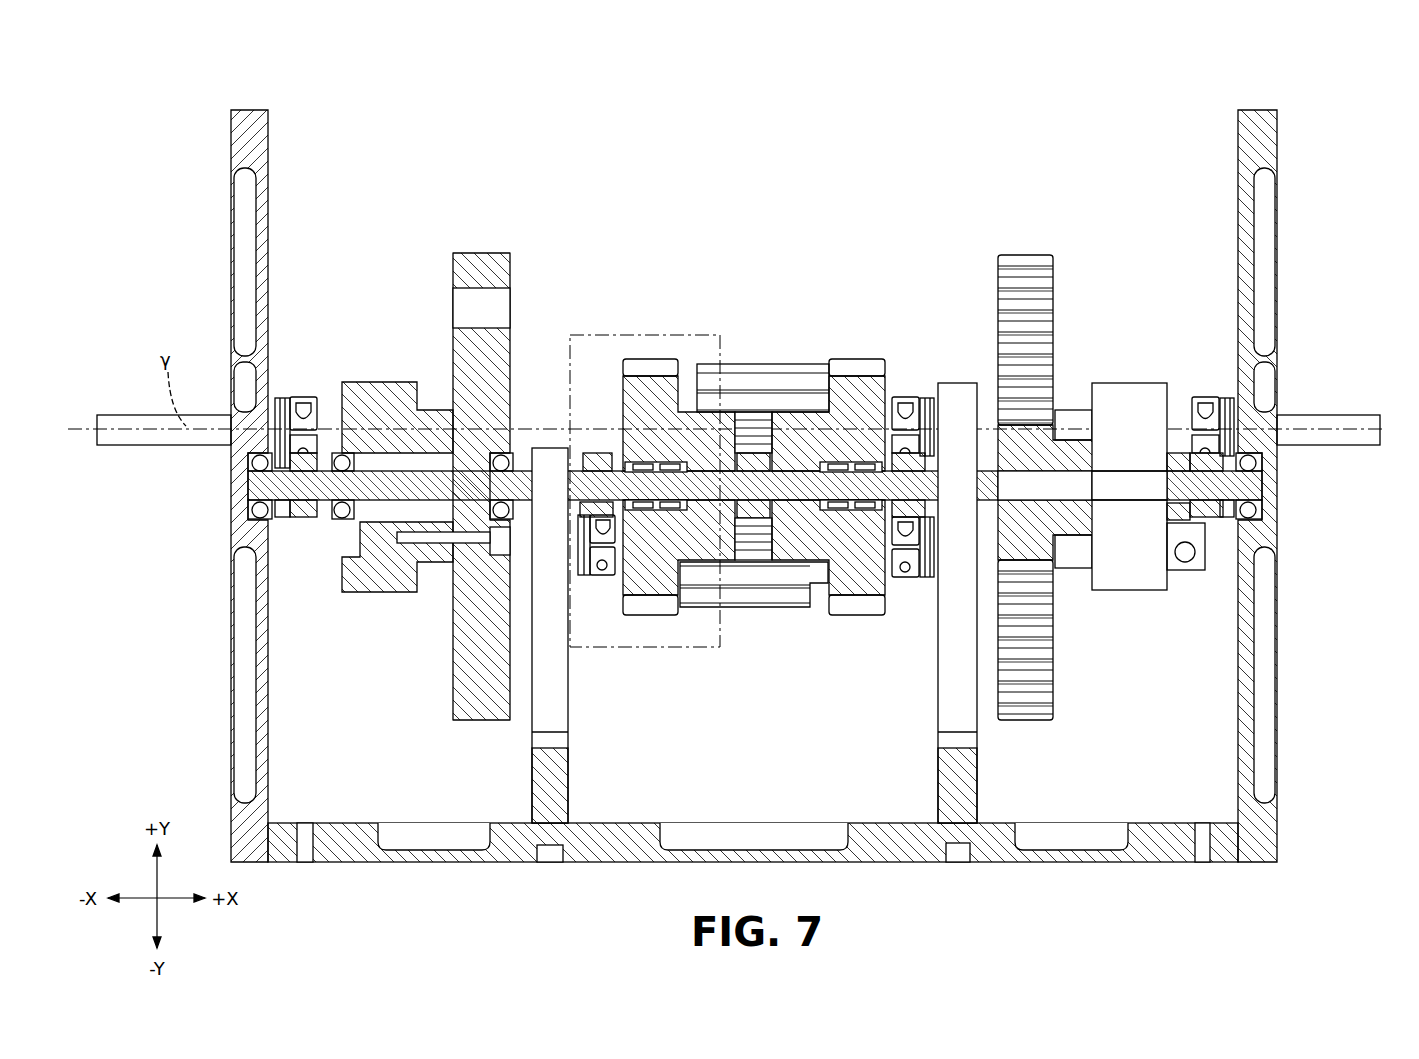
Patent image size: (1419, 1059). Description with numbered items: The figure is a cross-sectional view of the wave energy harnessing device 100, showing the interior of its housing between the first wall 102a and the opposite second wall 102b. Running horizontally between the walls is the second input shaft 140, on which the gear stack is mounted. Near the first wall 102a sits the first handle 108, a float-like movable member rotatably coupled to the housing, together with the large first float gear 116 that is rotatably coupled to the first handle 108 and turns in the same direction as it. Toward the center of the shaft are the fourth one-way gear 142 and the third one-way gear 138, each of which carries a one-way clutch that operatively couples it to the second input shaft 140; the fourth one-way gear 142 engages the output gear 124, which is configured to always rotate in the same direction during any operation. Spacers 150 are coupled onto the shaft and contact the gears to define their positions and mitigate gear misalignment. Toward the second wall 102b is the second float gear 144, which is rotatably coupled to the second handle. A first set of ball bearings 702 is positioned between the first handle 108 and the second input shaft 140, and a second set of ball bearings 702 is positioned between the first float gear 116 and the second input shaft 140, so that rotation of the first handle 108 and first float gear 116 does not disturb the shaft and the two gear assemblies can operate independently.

The wave energy harnessing device 100 is at (440, 144).
The first wall 102a is at (246, 110).
The second wall 102b is at (1262, 110).
The first handle 108 is at (388, 382).
The first float gear 116 is at (452, 690).
The output gear 124 is at (760, 364).
The third one-way gear 138 is at (845, 360).
The second input shaft 140 is at (372, 502).
The fourth one-way gear 142 is at (637, 360).
The second float gear 144 is at (1025, 255).
The spacers 150 is at (700, 600).
The ball bearings 702 is at (500, 455).